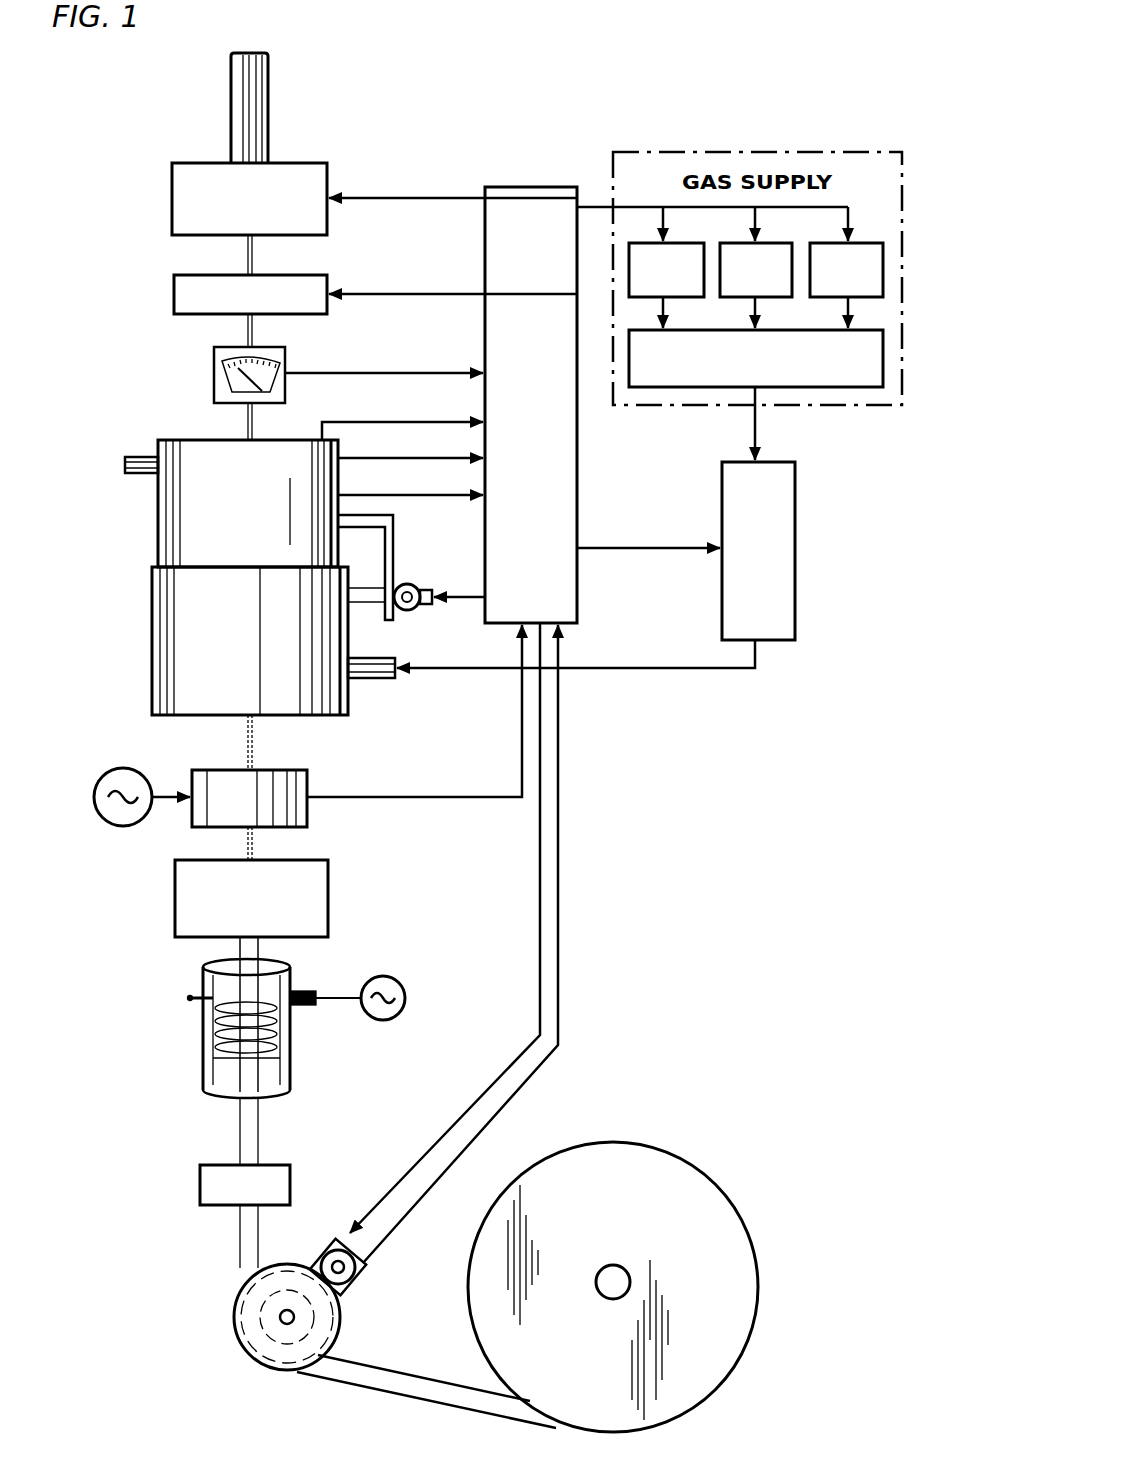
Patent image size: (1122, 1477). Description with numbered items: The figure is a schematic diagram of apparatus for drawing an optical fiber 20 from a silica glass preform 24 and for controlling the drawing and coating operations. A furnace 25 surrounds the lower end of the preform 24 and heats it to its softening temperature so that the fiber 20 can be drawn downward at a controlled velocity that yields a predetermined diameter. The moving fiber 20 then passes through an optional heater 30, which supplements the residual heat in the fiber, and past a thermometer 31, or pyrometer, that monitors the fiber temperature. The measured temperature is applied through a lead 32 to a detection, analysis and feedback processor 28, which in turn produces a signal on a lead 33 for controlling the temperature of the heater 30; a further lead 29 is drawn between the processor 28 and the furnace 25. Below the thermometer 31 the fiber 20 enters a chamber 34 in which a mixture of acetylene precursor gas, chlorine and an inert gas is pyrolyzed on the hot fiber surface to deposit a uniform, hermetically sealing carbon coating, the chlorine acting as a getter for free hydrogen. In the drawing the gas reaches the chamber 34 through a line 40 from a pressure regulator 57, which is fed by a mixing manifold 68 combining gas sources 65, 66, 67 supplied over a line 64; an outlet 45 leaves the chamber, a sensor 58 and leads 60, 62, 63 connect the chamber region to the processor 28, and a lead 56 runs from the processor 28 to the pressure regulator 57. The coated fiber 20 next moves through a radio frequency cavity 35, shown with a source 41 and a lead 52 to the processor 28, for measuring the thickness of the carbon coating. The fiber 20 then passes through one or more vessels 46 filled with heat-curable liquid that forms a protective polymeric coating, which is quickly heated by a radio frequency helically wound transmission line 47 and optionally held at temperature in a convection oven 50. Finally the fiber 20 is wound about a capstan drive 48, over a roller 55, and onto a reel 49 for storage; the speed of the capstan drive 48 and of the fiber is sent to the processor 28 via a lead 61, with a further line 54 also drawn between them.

The optical fiber 20 is at (256, 256).
The preform 24 is at (272, 128).
The furnace 25 is at (327, 170).
The detection, analysis and feedback processor 28 is at (540, 187).
The furnace control line 29 is at (410, 198).
The heater 30 is at (190, 315).
The thermometer 31 is at (278, 390).
The lead 32 is at (385, 373).
The lead 33 is at (382, 294).
The chamber 34 is at (152, 600).
The radio frequency cavity 35 is at (210, 775).
The gas inlet line 40 is at (662, 668).
The power source 41 is at (116, 770).
The gas outlet 45 is at (140, 456).
The vessels 46 is at (330, 886).
The radio frequency helically wound transmission line 47 is at (296, 982).
The capstan drive 48 is at (340, 1330).
The reel 49 is at (742, 1234).
The convection oven 50 is at (214, 1205).
The monitor signal line 52 is at (400, 797).
The drive control line 54 is at (462, 1118).
The roller 55 is at (367, 1265).
The regulator control line 56 is at (674, 548).
The pressure regulator 57 is at (722, 575).
The sensor 58 is at (476, 596).
The sensor signal line 60 is at (378, 422).
The lead 61 is at (512, 1093).
The sensor signal line 62 is at (376, 495).
The sensor signal line 63 is at (376, 458).
The gas supply line 64 is at (592, 206).
The acetylene gas source 65 is at (670, 243).
The chlorine gas source 66 is at (762, 243).
The other gas source 67 is at (856, 243).
The mixing manifold 68 is at (835, 387).